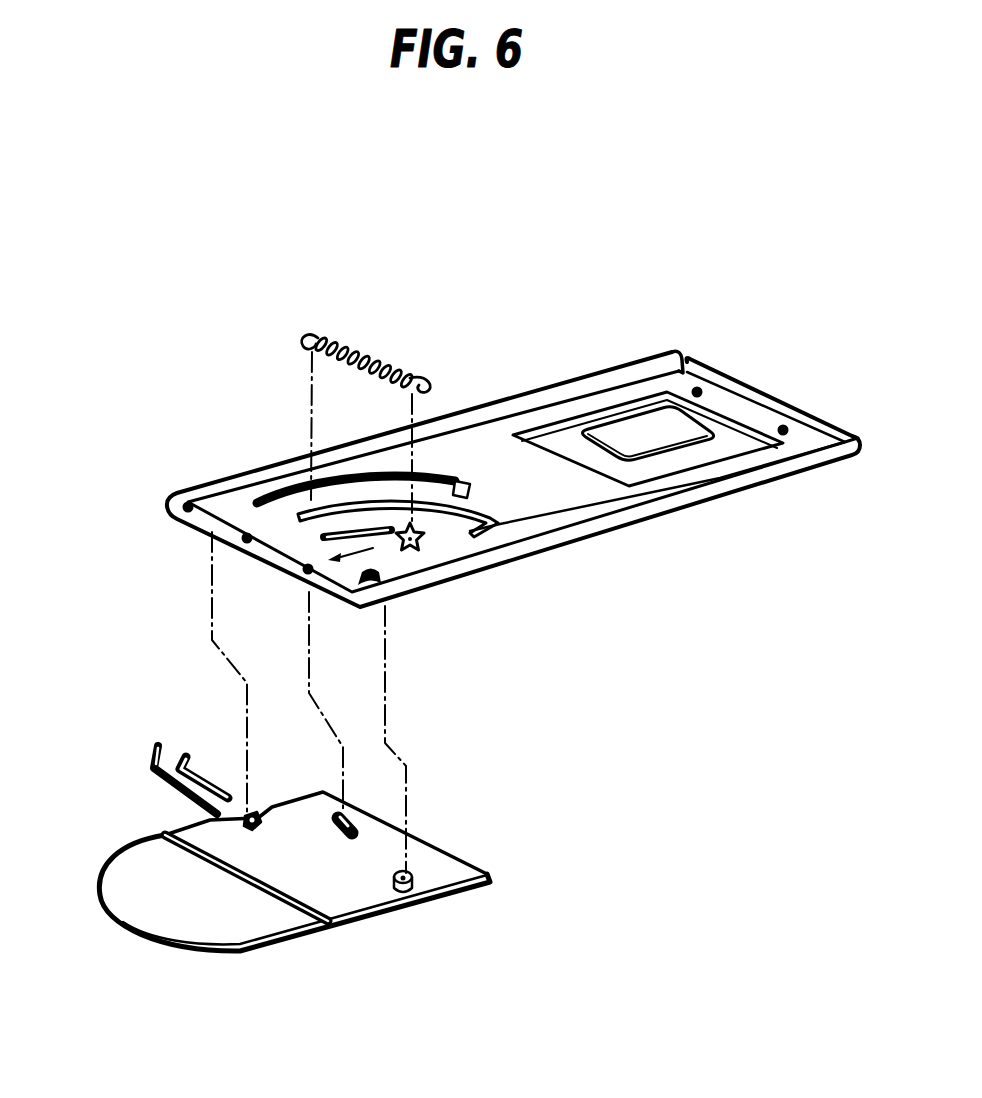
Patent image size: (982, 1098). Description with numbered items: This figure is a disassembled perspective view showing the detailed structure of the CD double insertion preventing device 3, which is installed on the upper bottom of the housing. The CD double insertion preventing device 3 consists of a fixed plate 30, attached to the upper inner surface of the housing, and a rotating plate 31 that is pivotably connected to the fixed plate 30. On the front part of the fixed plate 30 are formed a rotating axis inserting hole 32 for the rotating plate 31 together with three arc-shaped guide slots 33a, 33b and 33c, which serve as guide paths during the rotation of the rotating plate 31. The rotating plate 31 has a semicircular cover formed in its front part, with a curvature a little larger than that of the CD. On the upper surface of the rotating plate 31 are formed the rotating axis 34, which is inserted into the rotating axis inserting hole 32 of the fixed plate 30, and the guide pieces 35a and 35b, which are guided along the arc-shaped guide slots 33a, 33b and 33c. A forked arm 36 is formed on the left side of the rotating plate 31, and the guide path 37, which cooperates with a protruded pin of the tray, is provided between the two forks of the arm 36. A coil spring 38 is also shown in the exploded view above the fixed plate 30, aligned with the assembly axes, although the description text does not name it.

The CD double insertion preventing device 3 is at (166, 459).
The fixed plate 30 is at (488, 437).
The rotating plate 31 is at (333, 905).
The rotating axis inserting hole 32 is at (390, 547).
The arc-shaped guide slot 33a is at (260, 497).
The arc-shaped guide slot 33b is at (443, 523).
The arc-shaped guide slot 33c is at (378, 551).
The rotating axis 34 is at (489, 881).
The guide piece 35a is at (210, 820).
The guide piece 35b is at (355, 812).
The forked arm 36 is at (153, 767).
The guide path 37 is at (171, 745).
The coil spring 38 is at (362, 349).